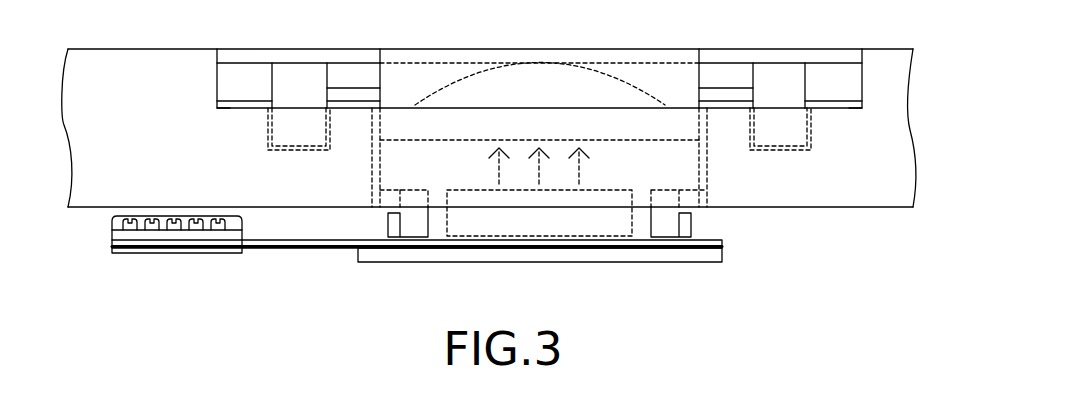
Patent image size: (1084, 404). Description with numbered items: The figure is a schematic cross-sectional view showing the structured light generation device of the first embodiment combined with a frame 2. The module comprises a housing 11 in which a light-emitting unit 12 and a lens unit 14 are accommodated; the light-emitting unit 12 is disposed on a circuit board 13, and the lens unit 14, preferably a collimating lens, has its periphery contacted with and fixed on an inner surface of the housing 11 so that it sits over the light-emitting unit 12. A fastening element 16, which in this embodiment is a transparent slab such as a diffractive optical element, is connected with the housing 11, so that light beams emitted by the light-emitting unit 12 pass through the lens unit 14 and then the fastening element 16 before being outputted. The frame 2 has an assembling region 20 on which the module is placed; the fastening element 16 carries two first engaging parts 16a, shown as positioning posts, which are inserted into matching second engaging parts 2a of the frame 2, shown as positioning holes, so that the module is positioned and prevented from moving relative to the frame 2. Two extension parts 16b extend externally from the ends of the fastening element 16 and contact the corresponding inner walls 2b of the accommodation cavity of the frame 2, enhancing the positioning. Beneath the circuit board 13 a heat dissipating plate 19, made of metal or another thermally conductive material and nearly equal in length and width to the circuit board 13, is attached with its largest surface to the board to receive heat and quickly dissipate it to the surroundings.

The frame 2 is at (898, 176).
The second engaging part 2a is at (267, 128).
The inner wall 2b is at (225, 112).
The housing 11 is at (423, 80).
The light-emitting unit 12 is at (585, 223).
The circuit board 13 is at (315, 242).
The lens unit 14 is at (562, 95).
The fastening element 16 is at (715, 55).
The first engaging part 16a is at (296, 137).
The extension part 16b is at (247, 55).
The heat dissipating plate 19 is at (425, 255).
The assembling region 20 is at (710, 190).